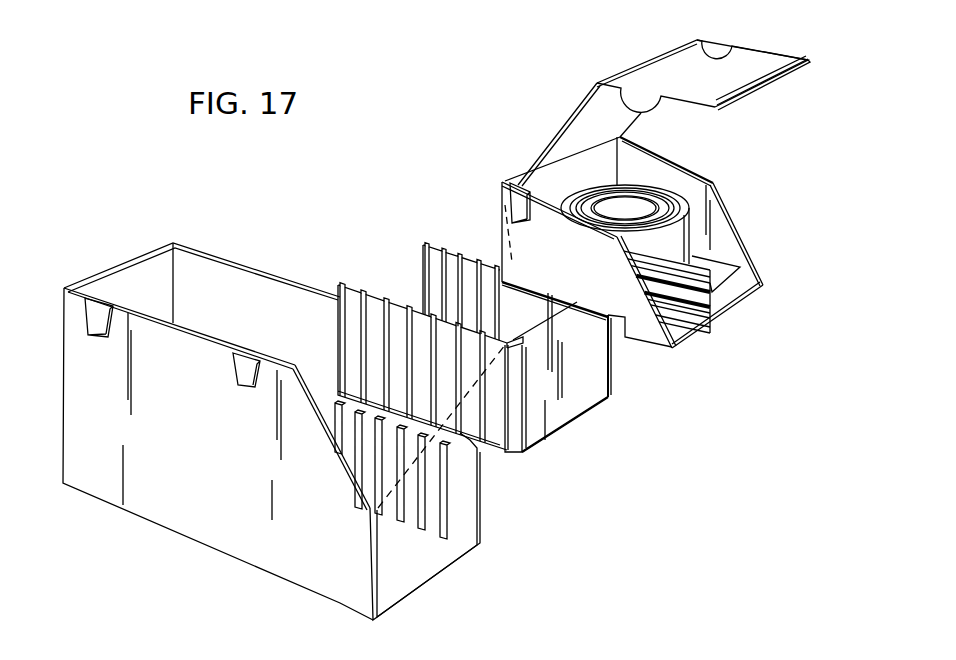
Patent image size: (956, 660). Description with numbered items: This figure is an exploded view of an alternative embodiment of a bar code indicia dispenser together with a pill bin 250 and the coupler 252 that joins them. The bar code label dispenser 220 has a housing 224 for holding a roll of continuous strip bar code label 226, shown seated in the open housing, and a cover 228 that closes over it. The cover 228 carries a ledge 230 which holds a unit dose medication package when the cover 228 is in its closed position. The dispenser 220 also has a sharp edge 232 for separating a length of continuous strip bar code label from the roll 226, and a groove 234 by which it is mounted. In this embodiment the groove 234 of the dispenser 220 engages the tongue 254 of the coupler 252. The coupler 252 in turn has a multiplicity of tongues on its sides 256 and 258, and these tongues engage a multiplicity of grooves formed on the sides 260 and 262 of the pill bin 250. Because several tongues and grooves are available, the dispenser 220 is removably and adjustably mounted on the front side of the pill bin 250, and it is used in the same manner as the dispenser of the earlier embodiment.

The bar code label dispenser 220 is at (738, 200).
The housing 224 is at (749, 256).
The roll of continuous strip bar code label 226 is at (658, 186).
The cover 228 is at (643, 58).
The ledge 230 is at (773, 70).
The sharp edge 232 is at (655, 317).
The groove 234 is at (512, 180).
The pill bin 250 is at (237, 566).
The coupler 252 is at (546, 438).
The tongue 254 is at (613, 385).
The side of coupler 256 is at (337, 290).
The side of coupler 258 is at (463, 255).
The side of pill bin 260 is at (380, 592).
The side of pill bin 262 is at (448, 493).